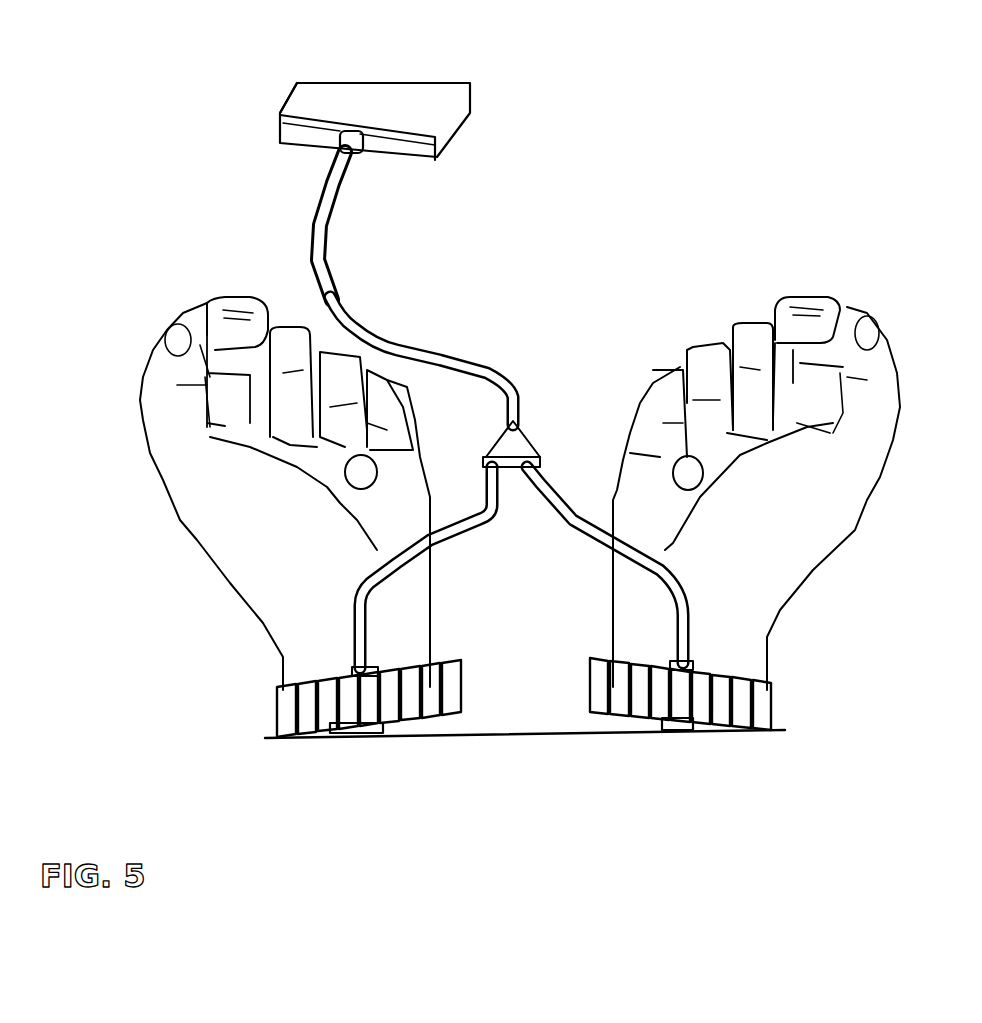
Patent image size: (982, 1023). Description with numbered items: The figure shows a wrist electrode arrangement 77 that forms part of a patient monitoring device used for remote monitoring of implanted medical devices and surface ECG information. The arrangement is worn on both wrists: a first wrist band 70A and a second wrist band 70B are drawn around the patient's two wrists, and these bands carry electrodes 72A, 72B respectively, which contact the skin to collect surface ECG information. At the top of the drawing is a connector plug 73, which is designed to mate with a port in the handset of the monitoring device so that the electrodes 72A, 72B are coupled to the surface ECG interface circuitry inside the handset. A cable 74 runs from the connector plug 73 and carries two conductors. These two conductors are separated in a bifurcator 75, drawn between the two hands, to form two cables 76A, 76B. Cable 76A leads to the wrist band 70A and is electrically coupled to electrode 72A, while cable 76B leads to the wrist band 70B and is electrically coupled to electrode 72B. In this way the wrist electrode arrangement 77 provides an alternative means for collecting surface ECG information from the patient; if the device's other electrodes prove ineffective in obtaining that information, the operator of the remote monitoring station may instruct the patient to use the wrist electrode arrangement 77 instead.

The wrist electrode arrangement 77 is at (118, 185).
The connector plug 73 is at (278, 127).
The cable 74 is at (437, 358).
The bifurcator 75 is at (540, 463).
The cable 76A is at (470, 520).
The cable 76B is at (545, 525).
The wrist band 70A is at (283, 722).
The wrist band 70B is at (603, 712).
The electrode 72A is at (365, 740).
The electrode 72B is at (678, 732).